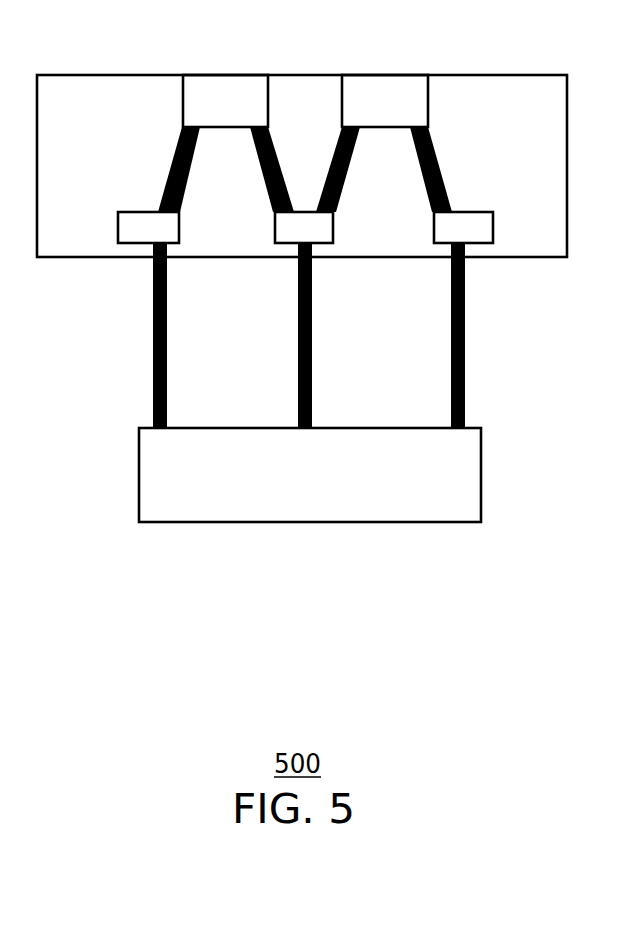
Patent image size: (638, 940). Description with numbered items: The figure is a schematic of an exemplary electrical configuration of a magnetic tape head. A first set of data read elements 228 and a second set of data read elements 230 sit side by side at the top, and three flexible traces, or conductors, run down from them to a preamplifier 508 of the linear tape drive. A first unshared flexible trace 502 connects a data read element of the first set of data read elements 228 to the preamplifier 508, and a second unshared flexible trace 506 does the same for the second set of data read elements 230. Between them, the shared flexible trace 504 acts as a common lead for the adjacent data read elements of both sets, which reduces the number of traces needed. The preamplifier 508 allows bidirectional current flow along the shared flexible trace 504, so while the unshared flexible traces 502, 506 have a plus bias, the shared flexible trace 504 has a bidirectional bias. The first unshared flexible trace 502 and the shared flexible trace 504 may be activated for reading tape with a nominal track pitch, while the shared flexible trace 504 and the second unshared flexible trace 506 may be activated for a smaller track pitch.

The first set of data read elements 228 is at (225, 75).
The second set of data read elements 230 is at (383, 75).
The first unshared flexible trace 502 is at (152, 328).
The shared flexible trace 504 is at (297, 332).
The second unshared flexible trace 506 is at (452, 335).
The preamplifier 508 is at (139, 473).